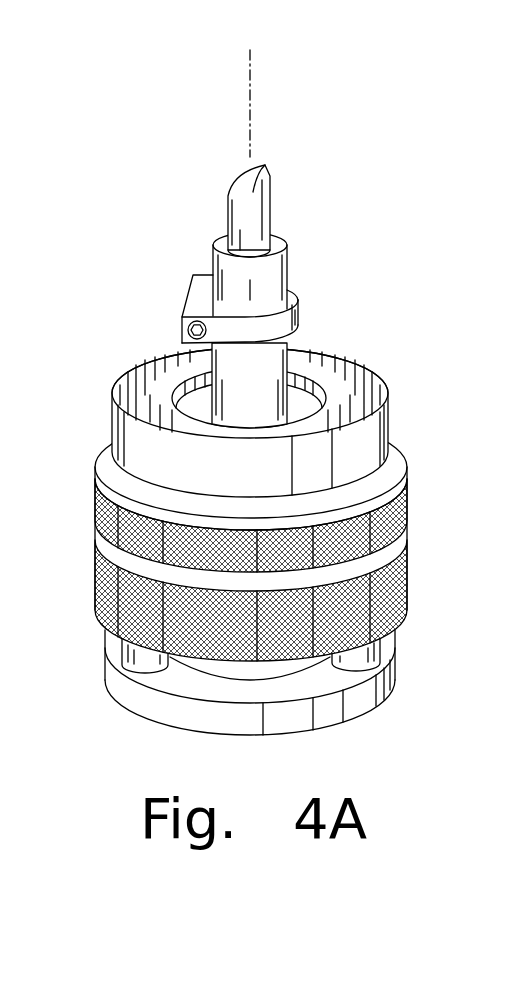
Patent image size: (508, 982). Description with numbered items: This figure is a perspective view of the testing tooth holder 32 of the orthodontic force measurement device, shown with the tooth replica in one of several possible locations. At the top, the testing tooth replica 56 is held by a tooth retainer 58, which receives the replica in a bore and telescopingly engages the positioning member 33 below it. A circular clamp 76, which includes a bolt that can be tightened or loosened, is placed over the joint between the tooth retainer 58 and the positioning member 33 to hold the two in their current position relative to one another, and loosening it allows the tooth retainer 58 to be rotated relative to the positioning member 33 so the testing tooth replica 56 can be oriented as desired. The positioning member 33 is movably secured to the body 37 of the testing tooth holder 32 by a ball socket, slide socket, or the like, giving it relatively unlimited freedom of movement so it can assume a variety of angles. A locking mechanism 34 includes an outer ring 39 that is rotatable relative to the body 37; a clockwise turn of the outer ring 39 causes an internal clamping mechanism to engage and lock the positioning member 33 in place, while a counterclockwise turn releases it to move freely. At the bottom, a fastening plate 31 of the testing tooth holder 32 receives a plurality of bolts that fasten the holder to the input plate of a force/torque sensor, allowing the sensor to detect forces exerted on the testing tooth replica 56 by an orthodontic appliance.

The fastening plate 31 is at (380, 680).
The testing tooth holder 32 is at (394, 347).
The positioning member 33 is at (273, 357).
The locking mechanism 34 is at (411, 454).
The body 37 is at (98, 584).
The outer ring 39 is at (96, 505).
The testing tooth replica 56 is at (240, 221).
The tooth retainer 58 is at (278, 268).
The circular clamp 76 is at (190, 306).